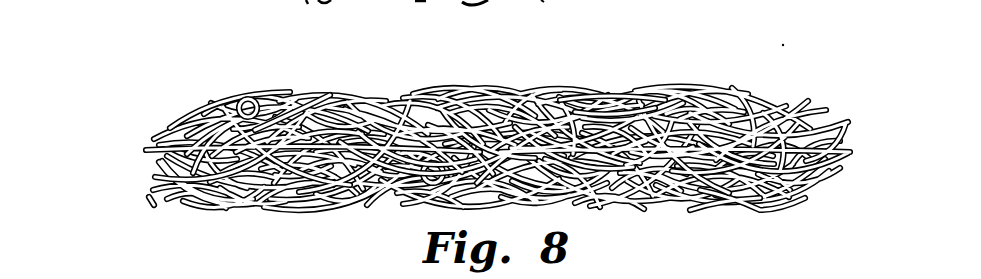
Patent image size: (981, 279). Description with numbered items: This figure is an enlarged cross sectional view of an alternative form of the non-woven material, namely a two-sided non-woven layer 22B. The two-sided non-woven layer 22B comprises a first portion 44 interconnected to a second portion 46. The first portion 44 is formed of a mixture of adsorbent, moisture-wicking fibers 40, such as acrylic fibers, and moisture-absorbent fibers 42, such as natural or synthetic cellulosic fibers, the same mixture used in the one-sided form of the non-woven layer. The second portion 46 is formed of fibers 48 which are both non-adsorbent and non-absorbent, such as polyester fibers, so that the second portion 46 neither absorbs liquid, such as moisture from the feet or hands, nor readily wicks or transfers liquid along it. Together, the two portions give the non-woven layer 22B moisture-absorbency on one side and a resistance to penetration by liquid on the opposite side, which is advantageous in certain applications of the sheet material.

The two-sided non-woven layer 22B is at (474, 134).
The moisture-wicking fibers 40 is at (335, 97).
The moisture-absorbent fibers 42 is at (660, 97).
The first portion 44 is at (446, 116).
The second portion 46 is at (441, 192).
The fibers 48 is at (807, 197).